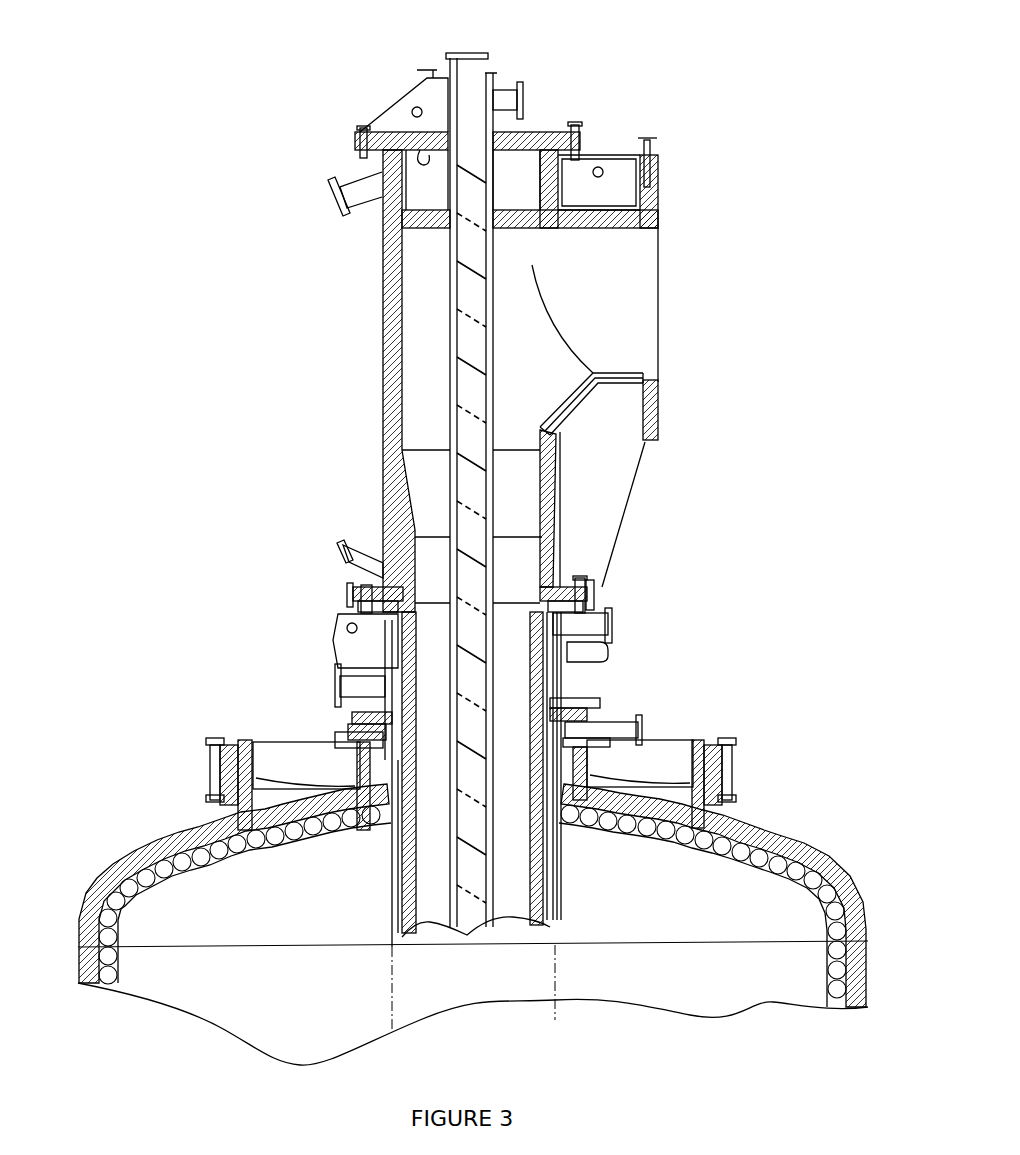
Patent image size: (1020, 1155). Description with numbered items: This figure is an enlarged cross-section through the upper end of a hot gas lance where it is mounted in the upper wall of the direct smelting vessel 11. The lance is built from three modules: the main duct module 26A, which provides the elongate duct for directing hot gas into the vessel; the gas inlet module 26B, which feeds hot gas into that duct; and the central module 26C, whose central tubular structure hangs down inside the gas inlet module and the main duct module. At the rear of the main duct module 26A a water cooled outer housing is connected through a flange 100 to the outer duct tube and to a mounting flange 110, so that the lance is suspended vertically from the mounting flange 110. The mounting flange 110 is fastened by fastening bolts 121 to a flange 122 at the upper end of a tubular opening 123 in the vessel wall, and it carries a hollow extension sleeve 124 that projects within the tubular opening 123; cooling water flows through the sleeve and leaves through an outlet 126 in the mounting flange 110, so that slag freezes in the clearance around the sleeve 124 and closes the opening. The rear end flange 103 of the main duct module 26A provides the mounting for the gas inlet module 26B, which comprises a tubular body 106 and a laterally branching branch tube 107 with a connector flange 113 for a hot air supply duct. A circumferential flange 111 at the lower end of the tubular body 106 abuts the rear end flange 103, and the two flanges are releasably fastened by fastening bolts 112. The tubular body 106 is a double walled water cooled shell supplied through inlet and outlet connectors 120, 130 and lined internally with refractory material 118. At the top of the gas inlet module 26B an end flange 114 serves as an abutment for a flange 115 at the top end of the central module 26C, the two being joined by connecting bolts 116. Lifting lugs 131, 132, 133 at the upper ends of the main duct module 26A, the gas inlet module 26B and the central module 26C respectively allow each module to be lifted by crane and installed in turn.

The metallurgical vessel 11 is at (807, 847).
The main duct module 26A is at (557, 857).
The gas inlet module 26B is at (548, 487).
The central module 26C is at (557, 885).
The flange 100 is at (598, 658).
The rear end flange 103 is at (588, 603).
The tubular body 106 is at (382, 343).
The branch tube 107 is at (603, 230).
The mounting flange 110 is at (598, 716).
The circumferential flange 111 is at (590, 584).
The fastening bolts 112 is at (580, 580).
The connector flange 113 is at (655, 423).
The end flange 114 is at (357, 155).
The flange 115 is at (537, 130).
The connecting bolts 116 is at (358, 134).
The refractory material 118 is at (568, 395).
The inlet connector 120 is at (345, 212).
The fastening bolts 121 is at (595, 712).
The flange 122 is at (352, 722).
The tubular opening 123 is at (740, 777).
The extension sleeve 124 is at (392, 838).
The outlet 126 is at (625, 727).
The outlet connector 130 is at (352, 555).
The lifting lugs 131 is at (338, 640).
The lifting lugs 132 is at (600, 168).
The lifting lugs 133 is at (405, 112).